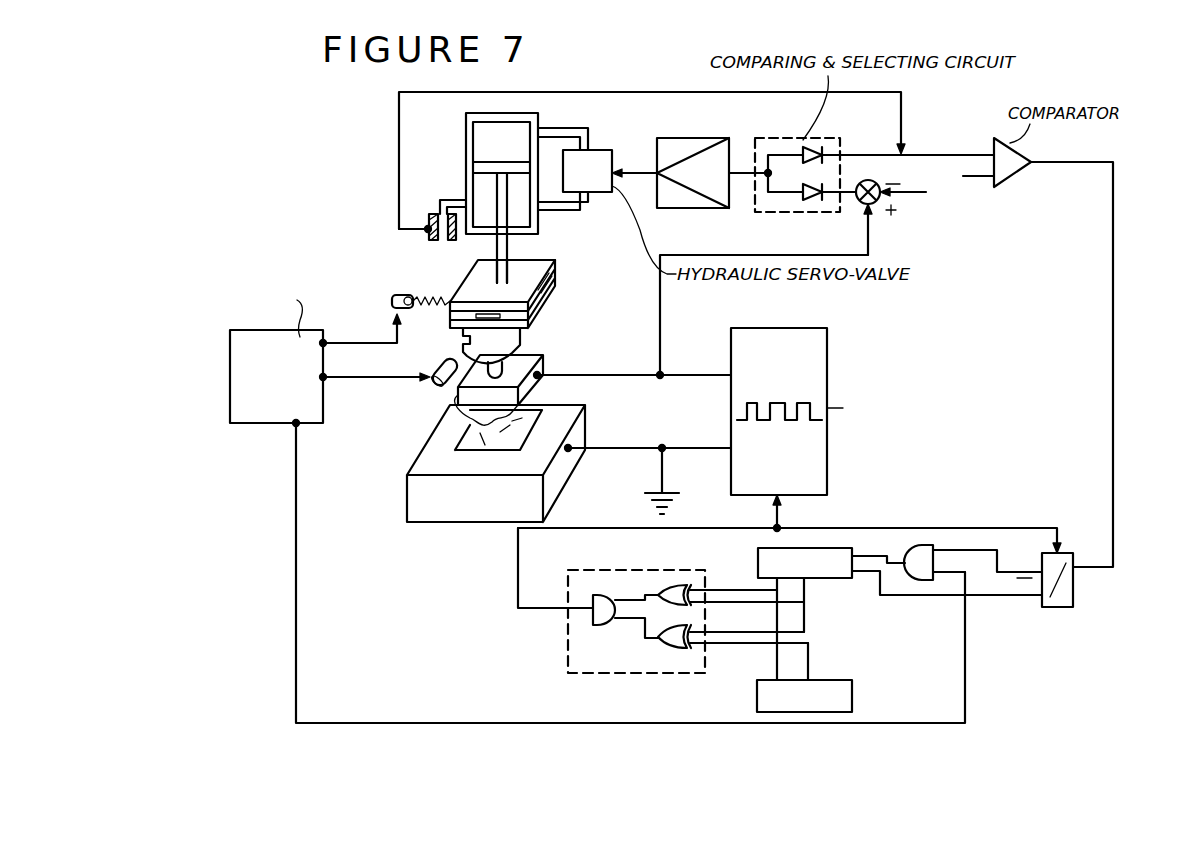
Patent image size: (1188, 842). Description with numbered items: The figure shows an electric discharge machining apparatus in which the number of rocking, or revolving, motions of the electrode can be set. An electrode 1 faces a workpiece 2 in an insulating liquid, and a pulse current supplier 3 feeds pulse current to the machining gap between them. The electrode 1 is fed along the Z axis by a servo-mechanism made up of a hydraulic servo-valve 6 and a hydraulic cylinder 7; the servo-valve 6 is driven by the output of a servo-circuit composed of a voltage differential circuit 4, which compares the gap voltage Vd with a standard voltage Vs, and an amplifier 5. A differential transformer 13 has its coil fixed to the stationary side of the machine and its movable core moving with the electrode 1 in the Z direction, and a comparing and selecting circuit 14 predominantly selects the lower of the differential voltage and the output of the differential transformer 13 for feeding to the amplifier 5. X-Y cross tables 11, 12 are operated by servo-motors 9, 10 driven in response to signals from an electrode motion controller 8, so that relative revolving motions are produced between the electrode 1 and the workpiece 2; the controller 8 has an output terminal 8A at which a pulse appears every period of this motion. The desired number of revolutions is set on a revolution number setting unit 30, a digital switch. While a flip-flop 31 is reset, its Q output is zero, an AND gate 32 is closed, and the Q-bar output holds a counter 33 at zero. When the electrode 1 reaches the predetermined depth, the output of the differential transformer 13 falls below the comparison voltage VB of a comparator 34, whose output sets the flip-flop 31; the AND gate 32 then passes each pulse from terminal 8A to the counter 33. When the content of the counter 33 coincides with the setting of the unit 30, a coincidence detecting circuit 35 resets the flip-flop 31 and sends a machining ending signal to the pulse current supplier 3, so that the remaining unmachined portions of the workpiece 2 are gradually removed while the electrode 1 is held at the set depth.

The electrode 1 is at (548, 368).
The workpiece 2 is at (588, 433).
The pulse current supplier 3 is at (803, 362).
The voltage differential circuit 4 is at (857, 199).
The amplifier 5 is at (690, 146).
The hydraulic servo-valve 6 is at (577, 150).
The hydraulic cylinder 7 is at (512, 135).
The electrode motion controller 8 is at (250, 412).
The output terminal 8A is at (298, 426).
The servo-motor 9 is at (394, 298).
The servo-motor 10 is at (432, 386).
The X-Y cross table 11 is at (553, 278).
The X-Y cross table 12 is at (553, 302).
The differential transformer 13 is at (424, 222).
The comparing and selecting circuit 14 is at (767, 205).
The revolution number setting unit 30 is at (855, 697).
The flip-flop 31 is at (1053, 608).
The AND gate 32 is at (926, 570).
The counter 33 is at (823, 580).
The comparator 34 is at (1010, 176).
The coincidence detecting circuit 35 is at (633, 665).